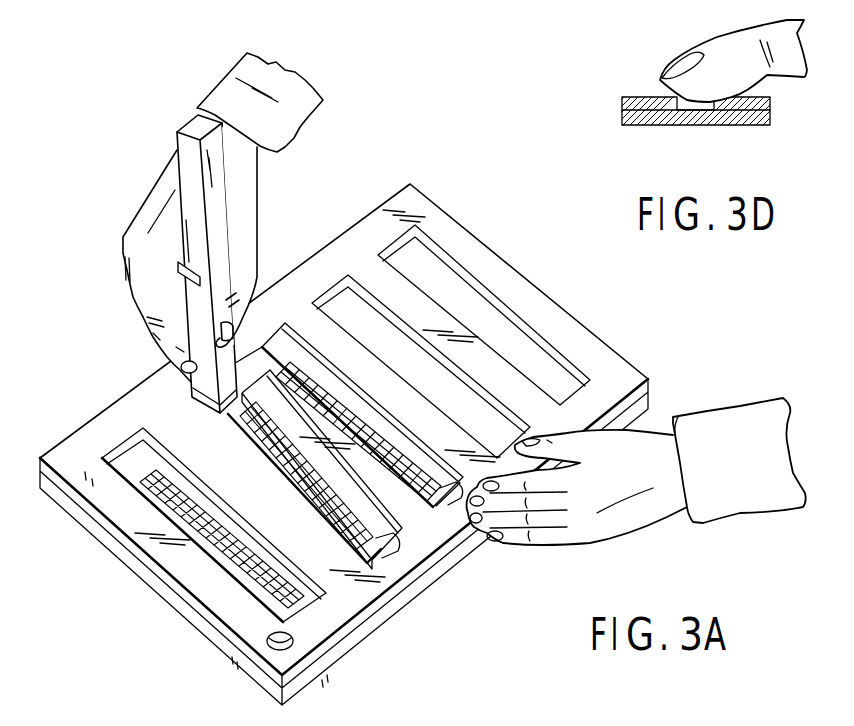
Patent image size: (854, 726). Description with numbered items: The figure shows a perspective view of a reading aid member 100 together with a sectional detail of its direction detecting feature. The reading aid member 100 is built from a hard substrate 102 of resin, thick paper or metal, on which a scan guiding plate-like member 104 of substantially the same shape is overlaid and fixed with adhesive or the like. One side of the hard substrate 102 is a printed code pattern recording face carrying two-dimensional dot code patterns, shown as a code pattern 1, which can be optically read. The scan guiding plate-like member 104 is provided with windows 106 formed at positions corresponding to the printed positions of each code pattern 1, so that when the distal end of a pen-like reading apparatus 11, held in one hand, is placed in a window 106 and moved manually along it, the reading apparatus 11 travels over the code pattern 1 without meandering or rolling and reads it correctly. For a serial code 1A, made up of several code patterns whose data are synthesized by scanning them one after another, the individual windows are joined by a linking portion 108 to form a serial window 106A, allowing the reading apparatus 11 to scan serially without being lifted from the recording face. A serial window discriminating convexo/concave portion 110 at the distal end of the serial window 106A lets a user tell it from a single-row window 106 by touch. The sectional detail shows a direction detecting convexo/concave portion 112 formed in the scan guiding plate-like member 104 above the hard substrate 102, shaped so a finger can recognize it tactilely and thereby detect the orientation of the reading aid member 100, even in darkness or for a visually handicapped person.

In FIG. 3A, the reading aid member 100 is at (344, 432).
In FIG. 3A, the hard substrate 102 is at (133, 563).
In FIG. 3D, the hard substrate 102 is at (614, 125).
In FIG. 3A, the scan guiding plate-like member 104 is at (93, 427).
In FIG. 3D, the scan guiding plate-like member 104 is at (617, 98).
In FIG. 3A, the windows 106 is at (413, 253).
In FIG. 3A, the serial window 106A is at (372, 563).
In FIG. 3A, the linking portion 108 is at (258, 372).
In FIG. 3A, the serial window discriminating convexo/concave portion 110 is at (405, 545).
In FIG. 3D, the direction detecting convexo/concave portion 112 is at (699, 128).
In FIG. 3A, the code pattern 1 is at (268, 591).
In FIG. 3A, the serial code 1A is at (447, 497).
In FIG. 3A, the pen-like reading apparatus 11 is at (184, 151).